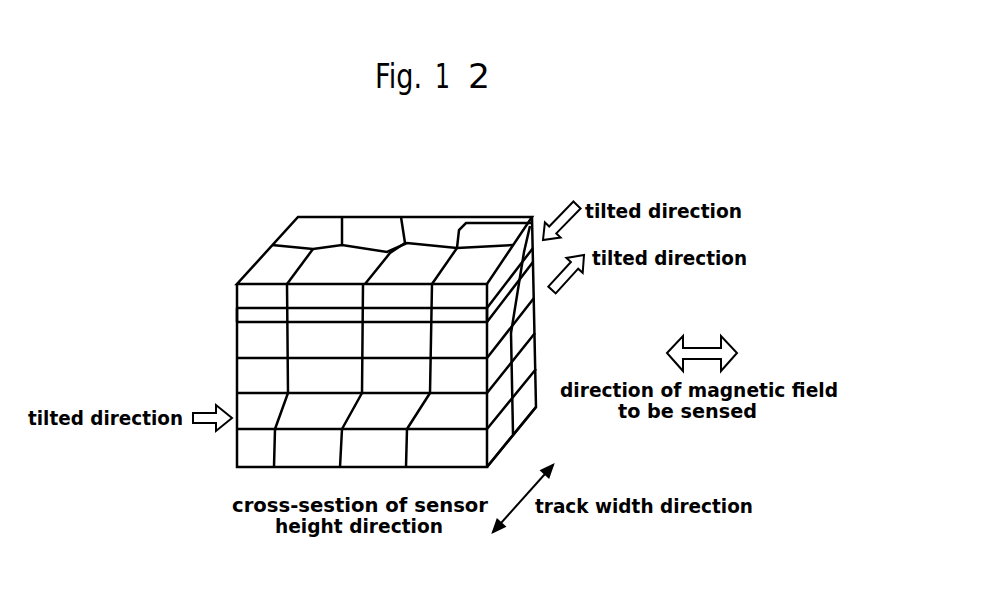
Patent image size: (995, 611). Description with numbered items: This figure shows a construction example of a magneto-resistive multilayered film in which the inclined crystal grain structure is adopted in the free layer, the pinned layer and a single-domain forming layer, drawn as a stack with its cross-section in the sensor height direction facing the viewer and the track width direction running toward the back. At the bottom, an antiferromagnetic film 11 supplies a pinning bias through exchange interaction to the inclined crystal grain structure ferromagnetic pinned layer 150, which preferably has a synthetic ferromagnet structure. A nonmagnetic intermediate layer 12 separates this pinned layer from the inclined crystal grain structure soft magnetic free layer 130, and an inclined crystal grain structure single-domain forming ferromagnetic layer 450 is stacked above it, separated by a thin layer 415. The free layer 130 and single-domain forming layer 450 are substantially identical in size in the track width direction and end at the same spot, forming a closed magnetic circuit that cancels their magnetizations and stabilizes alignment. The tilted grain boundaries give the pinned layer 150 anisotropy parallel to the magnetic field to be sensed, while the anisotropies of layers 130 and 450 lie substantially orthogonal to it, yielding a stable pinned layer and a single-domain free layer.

The inclined crystal grain structure single-domain forming ferromagnetic layer 450 is at (250, 276).
The intermediate layer 415 is at (240, 305).
The inclined crystal grain structure soft magnetic free layer 130 is at (241, 342).
The nonmagnetic intermediate layer 12 is at (534, 310).
The inclined crystal grain structure ferromagnetic pinned layer 150 is at (528, 357).
The antiferromagnetic film 11 is at (533, 413).